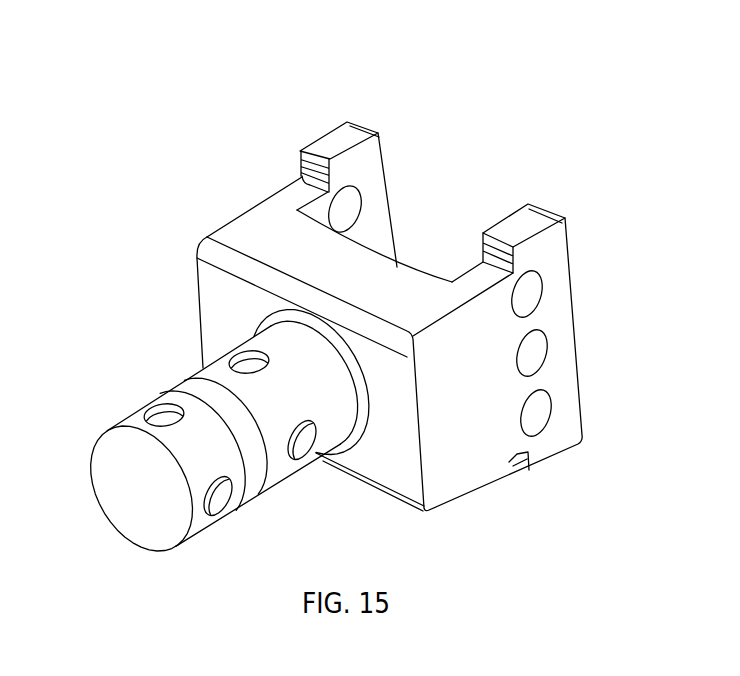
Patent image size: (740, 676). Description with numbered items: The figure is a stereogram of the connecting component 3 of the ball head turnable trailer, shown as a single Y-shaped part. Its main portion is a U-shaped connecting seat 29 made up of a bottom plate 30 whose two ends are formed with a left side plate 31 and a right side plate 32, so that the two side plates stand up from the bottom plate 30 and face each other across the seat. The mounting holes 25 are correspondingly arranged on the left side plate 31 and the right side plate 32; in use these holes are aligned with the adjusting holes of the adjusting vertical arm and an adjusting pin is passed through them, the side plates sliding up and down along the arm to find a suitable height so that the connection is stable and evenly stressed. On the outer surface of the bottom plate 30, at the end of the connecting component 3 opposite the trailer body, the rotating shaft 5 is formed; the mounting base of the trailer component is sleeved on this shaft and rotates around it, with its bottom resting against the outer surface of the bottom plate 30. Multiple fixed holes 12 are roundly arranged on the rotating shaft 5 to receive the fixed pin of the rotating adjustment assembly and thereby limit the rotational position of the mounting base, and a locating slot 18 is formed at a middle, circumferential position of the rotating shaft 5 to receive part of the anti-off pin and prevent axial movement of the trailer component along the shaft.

The connecting component 3 is at (343, 284).
The rotating shaft 5 is at (106, 438).
The fixed holes 12 is at (221, 498).
The locating slot 18 is at (188, 375).
The mounting holes 25 is at (541, 349).
The U-shaped connecting seat 29 is at (460, 171).
The bottom plate 30 is at (404, 274).
The left side plate 31 is at (571, 218).
The right side plate 32 is at (368, 164).